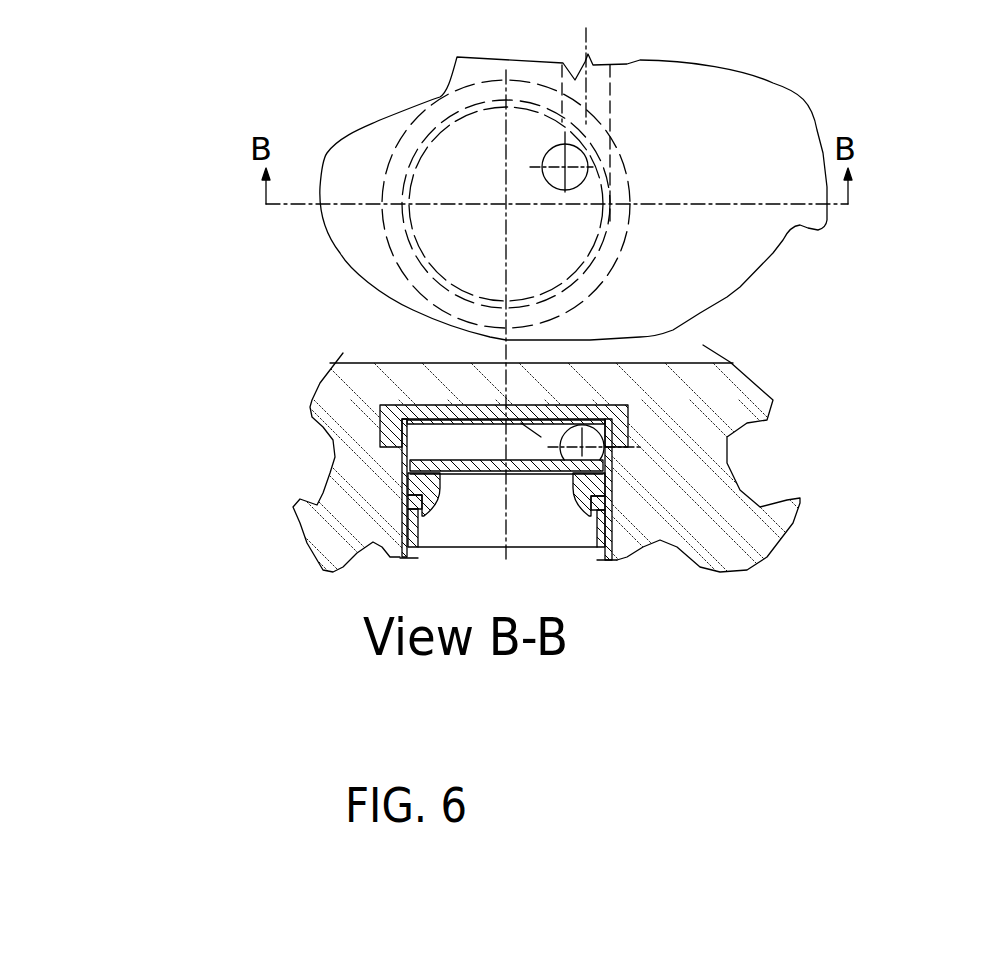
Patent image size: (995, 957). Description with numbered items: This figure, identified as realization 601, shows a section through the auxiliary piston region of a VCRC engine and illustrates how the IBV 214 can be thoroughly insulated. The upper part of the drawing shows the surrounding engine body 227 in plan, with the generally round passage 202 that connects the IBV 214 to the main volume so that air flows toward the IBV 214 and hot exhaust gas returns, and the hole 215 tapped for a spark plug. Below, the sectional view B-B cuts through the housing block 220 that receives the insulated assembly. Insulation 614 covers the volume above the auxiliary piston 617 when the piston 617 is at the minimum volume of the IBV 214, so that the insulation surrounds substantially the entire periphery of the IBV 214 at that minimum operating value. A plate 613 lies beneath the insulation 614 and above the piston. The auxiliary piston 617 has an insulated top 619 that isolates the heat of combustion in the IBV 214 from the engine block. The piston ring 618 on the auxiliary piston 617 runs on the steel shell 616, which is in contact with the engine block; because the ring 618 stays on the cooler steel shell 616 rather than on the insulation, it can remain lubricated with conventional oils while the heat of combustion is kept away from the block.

The housing body 227 is at (263, 130).
The passage 202 is at (613, 407).
The IBV 214 is at (557, 407).
The hole 215 is at (544, 176).
The housing section 220 is at (727, 292).
The insulation 614 is at (398, 405).
The plate 613 is at (521, 423).
The steel shell 616 is at (402, 517).
The auxiliary piston 617 is at (600, 483).
The piston ring 618 is at (422, 517).
The insulated top 619 is at (532, 477).
The view B-B 601 is at (683, 612).